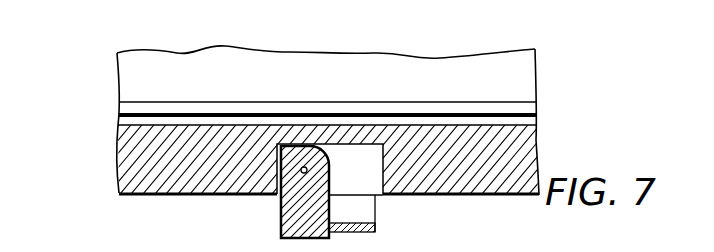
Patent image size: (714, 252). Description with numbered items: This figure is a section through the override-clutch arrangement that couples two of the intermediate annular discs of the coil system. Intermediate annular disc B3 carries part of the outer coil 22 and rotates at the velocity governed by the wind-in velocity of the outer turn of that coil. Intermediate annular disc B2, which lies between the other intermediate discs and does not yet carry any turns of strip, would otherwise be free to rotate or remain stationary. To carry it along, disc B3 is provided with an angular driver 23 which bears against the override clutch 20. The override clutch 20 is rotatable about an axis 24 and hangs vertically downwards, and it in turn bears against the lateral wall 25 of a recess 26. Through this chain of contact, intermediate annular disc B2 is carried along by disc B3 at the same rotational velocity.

The outer coil 22 is at (525, 83).
The intermediate annular disc B3 is at (525, 110).
The intermediate annular disc B2 is at (118, 156).
The lateral wall 25 is at (288, 144).
The override clutch 20 is at (281, 217).
The axis 24 is at (308, 169).
The recess 26 is at (373, 185).
The angular driver 23 is at (373, 230).